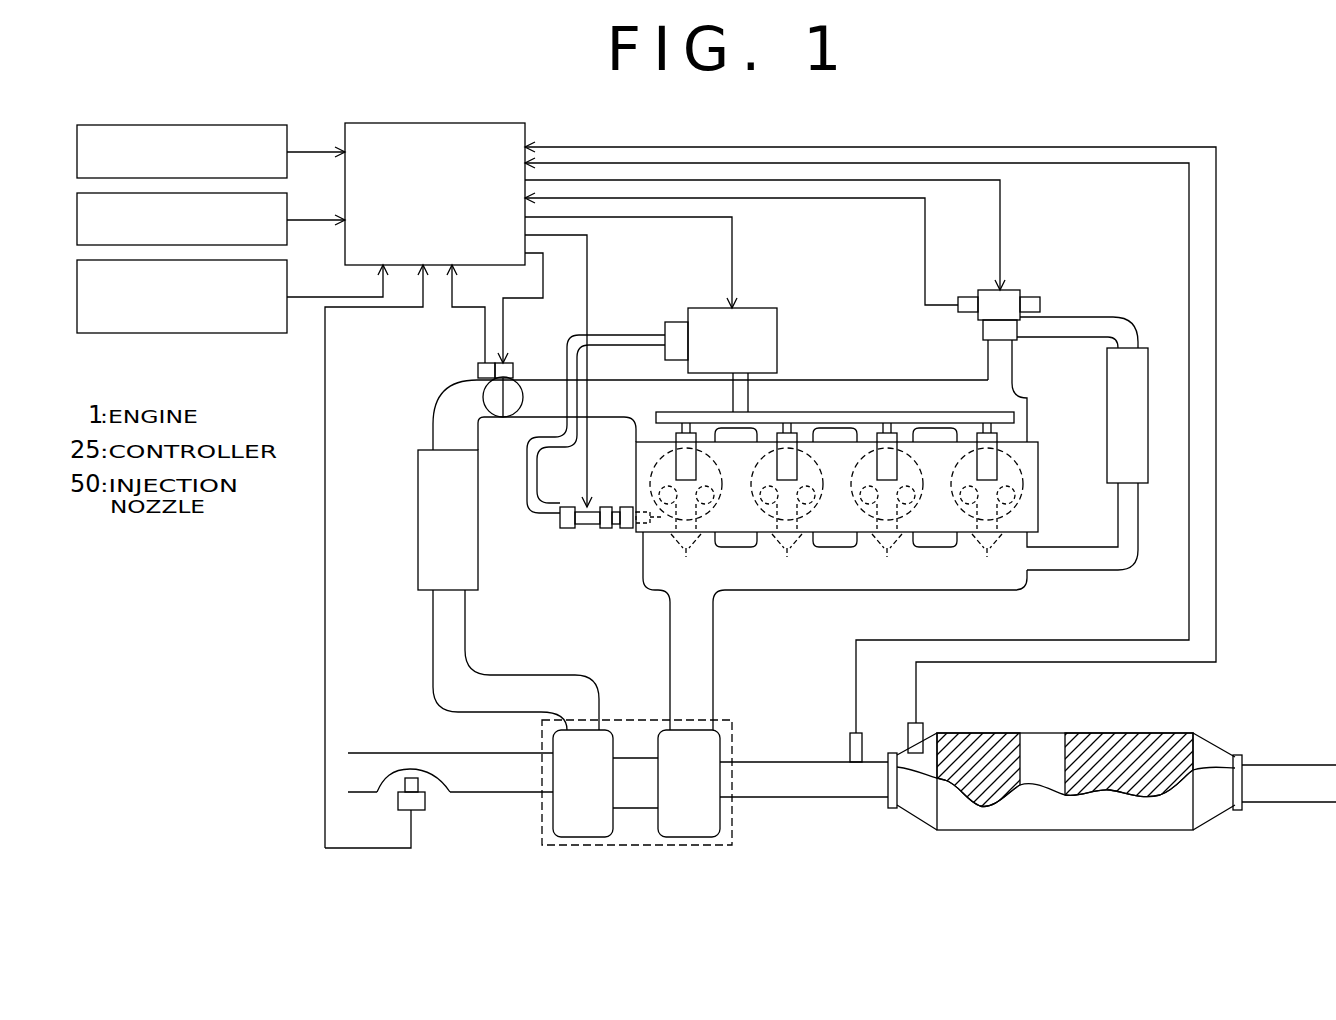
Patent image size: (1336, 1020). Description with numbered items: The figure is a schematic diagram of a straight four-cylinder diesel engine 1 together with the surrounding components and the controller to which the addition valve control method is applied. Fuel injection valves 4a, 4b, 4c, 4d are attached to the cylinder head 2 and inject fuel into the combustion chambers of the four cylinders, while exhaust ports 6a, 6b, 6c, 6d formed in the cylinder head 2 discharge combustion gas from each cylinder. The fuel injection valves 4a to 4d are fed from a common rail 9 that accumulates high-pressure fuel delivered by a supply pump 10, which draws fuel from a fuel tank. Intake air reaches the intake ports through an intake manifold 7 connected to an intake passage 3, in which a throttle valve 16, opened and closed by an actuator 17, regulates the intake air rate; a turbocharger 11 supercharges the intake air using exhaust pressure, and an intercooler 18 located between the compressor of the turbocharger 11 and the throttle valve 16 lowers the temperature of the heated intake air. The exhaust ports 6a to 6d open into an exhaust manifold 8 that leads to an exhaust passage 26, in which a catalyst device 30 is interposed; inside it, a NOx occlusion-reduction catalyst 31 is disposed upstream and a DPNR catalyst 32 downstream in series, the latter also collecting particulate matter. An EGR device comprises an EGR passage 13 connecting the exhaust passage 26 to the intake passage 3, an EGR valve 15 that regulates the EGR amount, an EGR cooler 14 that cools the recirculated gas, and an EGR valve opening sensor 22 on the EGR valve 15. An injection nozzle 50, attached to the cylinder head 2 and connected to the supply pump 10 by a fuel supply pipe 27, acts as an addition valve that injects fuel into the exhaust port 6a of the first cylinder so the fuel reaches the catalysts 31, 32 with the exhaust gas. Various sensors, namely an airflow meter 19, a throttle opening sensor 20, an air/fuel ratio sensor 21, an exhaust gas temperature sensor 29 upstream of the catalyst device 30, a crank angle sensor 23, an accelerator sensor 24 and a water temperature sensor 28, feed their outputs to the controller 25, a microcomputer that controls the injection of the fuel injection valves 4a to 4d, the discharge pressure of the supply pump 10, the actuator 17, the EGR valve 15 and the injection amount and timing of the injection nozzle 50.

The engine 1 is at (852, 463).
The cylinder head 2 is at (637, 478).
The intake passage 3 is at (433, 422).
The fuel injection valve 4a is at (686, 430).
The fuel injection valve 4b is at (788, 430).
The fuel injection valve 4c is at (901, 430).
The fuel injection valve 4d is at (997, 436).
The exhaust port 6a is at (688, 559).
The exhaust port 6b is at (789, 559).
The exhaust port 6c is at (888, 559).
The exhaust port 6d is at (989, 559).
The intake manifold 7 is at (808, 380).
The exhaust manifold 8 is at (940, 591).
The common rail 9 is at (882, 410).
The supply pump 10 is at (752, 307).
The turbocharger 11 is at (662, 847).
The EGR passage 13 is at (1139, 535).
The EGR cooler 14 is at (1148, 350).
The EGR valve 15 is at (1018, 290).
The throttle valve 16 is at (483, 392).
The actuator 17 is at (510, 363).
The intercooler 18 is at (418, 548).
The airflow meter 19 is at (426, 805).
The throttle opening sensor 20 is at (478, 366).
The air/fuel ratio sensor 21 is at (925, 735).
The EGR valve opening sensor 22 is at (962, 295).
The crank angle sensor 23 is at (270, 262).
The accelerator sensor 24 is at (232, 126).
The controller 25 is at (420, 123).
The exhaust passage 26 is at (805, 797).
The fuel supply pipe 27 is at (527, 487).
The water temperature sensor 28 is at (240, 334).
The exhaust gas temperature sensor 29 is at (850, 748).
The catalyst device 30 is at (1065, 783).
The NOx occlusion-reduction catalyst 31 is at (1010, 733).
The DPNR catalyst 32 is at (1148, 733).
The injection nozzle 50 is at (593, 530).